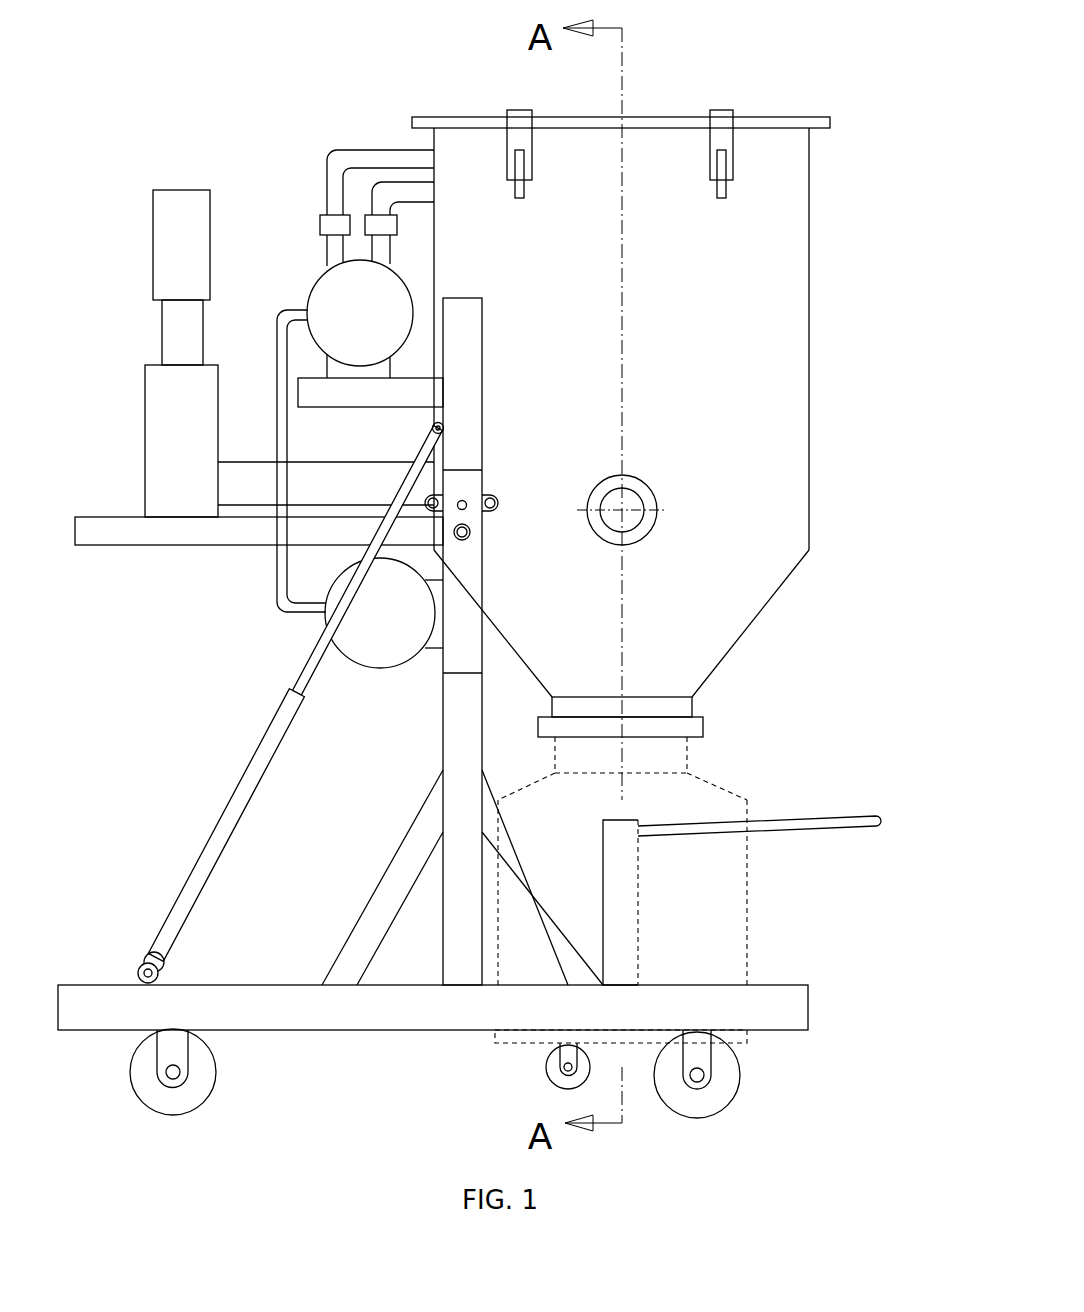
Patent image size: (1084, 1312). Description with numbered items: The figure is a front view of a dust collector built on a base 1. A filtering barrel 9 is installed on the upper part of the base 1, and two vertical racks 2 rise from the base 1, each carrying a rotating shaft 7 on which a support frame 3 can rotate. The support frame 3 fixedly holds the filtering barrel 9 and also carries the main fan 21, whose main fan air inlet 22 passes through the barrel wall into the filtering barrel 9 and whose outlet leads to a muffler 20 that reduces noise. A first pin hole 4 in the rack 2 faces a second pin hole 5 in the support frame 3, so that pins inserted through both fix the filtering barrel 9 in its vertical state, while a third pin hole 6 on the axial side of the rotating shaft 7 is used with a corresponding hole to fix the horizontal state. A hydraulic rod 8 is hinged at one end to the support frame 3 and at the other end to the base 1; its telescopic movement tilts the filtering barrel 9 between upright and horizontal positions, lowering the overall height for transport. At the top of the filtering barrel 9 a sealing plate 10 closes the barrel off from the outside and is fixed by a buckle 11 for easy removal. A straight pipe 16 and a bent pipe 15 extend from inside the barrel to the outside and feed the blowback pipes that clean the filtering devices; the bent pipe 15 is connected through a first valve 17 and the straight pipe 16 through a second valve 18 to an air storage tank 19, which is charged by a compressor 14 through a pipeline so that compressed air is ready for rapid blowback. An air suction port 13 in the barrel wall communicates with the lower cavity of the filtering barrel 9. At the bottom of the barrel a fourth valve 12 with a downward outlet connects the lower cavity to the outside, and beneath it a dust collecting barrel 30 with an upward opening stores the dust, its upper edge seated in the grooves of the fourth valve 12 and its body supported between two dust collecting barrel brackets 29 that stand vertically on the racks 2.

The base 1 is at (533, 1008).
The rack 2 is at (463, 955).
The support frame 3 is at (463, 349).
The first pin hole 4 is at (437, 500).
The second pin hole 5 is at (492, 503).
The third pin hole 6 is at (465, 507).
The rotating shaft 7 is at (465, 532).
The hydraulic rod 8 is at (280, 718).
The filtering barrel 9 is at (809, 338).
The sealing plate 10 is at (782, 118).
The buckle 11 is at (722, 117).
The fourth valve 12 is at (703, 727).
The air suction port 13 is at (647, 495).
The compressor 14 is at (378, 643).
The bent pipe 15 is at (420, 159).
The straight pipe 16 is at (400, 193).
The first valve 17 is at (320, 225).
The second valve 18 is at (365, 225).
The air storage tank 19 is at (318, 304).
The muffler 20 is at (185, 203).
The main fan 21 is at (146, 442).
The main fan air inlet 22 is at (250, 485).
The dust collecting barrel bracket 29 is at (620, 870).
The dust collecting barrel 30 is at (747, 937).